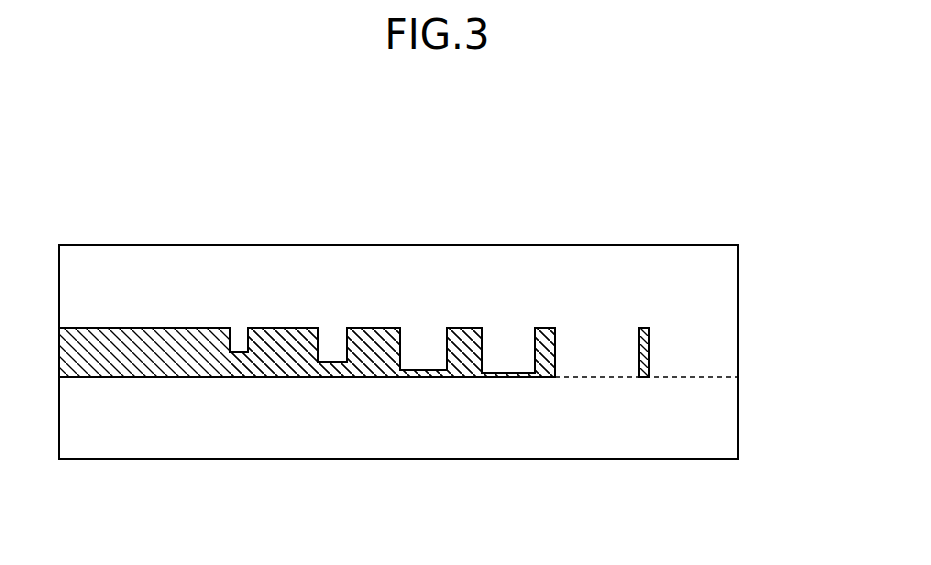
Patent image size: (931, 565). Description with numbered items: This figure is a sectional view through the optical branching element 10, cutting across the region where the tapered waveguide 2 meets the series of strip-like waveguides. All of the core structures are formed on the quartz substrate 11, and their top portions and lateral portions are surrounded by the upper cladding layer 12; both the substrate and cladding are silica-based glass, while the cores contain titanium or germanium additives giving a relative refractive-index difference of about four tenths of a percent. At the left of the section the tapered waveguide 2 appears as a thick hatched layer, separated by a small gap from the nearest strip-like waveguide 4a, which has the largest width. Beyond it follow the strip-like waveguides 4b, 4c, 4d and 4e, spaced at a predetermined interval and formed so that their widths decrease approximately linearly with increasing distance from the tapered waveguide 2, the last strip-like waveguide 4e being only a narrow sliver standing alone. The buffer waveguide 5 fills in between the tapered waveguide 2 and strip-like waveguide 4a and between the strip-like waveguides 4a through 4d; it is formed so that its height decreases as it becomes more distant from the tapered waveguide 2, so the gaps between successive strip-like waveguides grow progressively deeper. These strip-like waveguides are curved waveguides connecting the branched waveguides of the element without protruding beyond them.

The optical branching element 10 is at (721, 180).
The quartz substrate 11 is at (728, 419).
The upper cladding layer 12 is at (730, 311).
The tapered waveguide 2 is at (165, 328).
The strip-like waveguide 4a is at (287, 328).
The strip-like waveguide 4b is at (371, 328).
The strip-like waveguide 4c is at (467, 328).
The strip-like waveguide 4d is at (547, 328).
The strip-like waveguide 4e is at (645, 328).
The buffer waveguide 5 is at (497, 377).